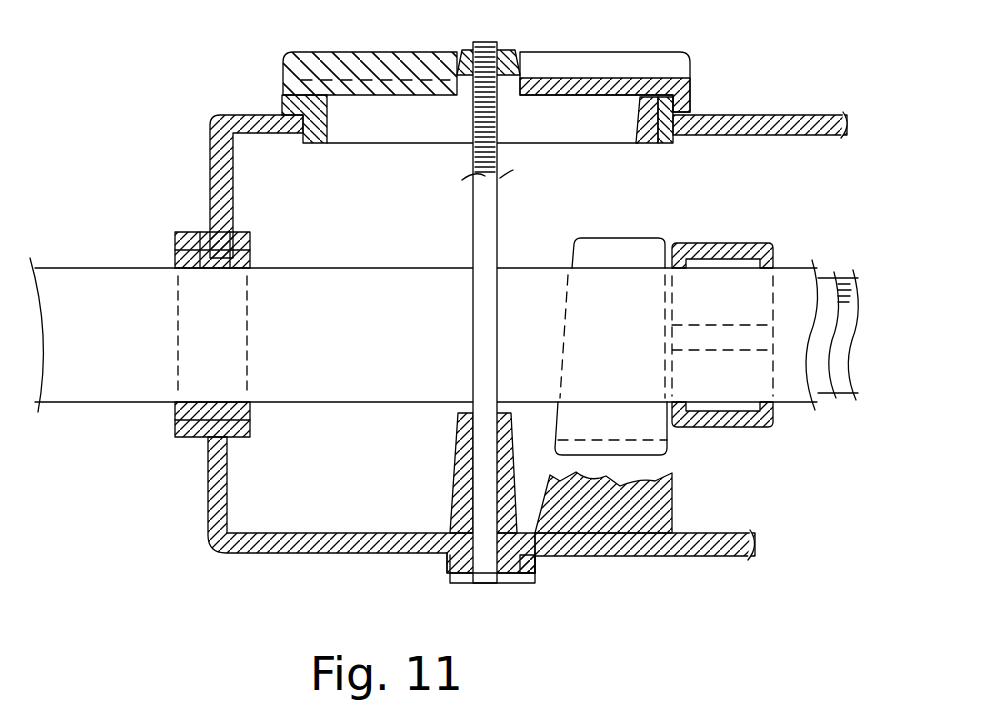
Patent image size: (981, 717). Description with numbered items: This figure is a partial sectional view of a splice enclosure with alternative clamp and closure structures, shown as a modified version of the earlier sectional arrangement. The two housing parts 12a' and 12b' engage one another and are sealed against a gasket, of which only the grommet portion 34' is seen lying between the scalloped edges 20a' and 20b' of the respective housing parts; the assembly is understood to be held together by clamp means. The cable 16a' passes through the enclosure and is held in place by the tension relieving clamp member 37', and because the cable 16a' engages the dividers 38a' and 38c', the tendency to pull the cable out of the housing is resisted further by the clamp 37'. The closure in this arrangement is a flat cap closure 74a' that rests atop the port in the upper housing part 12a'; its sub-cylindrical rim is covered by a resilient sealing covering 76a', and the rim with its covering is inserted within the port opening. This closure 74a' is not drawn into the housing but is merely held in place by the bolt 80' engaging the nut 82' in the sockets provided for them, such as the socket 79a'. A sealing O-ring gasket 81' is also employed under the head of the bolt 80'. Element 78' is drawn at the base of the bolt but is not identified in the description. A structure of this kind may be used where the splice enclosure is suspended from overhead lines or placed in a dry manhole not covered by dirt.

The housing part 12a' is at (760, 111).
The housing part 12b' is at (645, 567).
The cable 16a' is at (444, 335).
The scalloped edge 20a' is at (230, 186).
The scalloped edge 20b' is at (336, 487).
The grommet portion 34' is at (186, 248).
The tension relieving clamp member 37' is at (744, 316).
The divider 38a' is at (641, 502).
The divider 38c' is at (650, 357).
The closure 74a' is at (618, 142).
The resilient sealing covering 76a' is at (692, 142).
The boss 78' is at (463, 473).
The socket 79a' is at (456, 578).
The bolt 80' is at (464, 312).
The sealing O-ring gasket 81' is at (520, 581).
The nut 82' is at (506, 46).